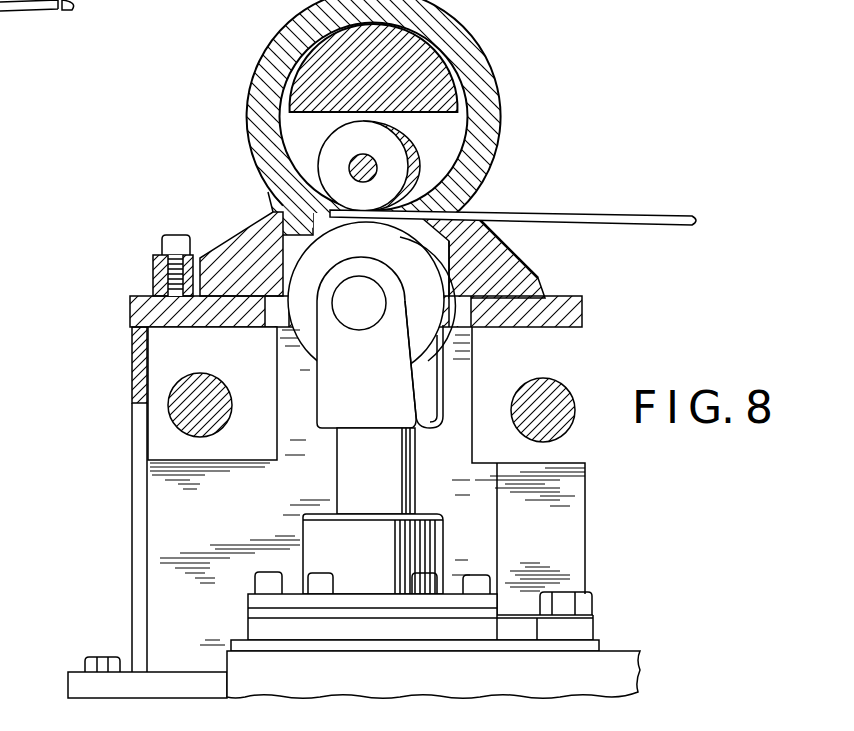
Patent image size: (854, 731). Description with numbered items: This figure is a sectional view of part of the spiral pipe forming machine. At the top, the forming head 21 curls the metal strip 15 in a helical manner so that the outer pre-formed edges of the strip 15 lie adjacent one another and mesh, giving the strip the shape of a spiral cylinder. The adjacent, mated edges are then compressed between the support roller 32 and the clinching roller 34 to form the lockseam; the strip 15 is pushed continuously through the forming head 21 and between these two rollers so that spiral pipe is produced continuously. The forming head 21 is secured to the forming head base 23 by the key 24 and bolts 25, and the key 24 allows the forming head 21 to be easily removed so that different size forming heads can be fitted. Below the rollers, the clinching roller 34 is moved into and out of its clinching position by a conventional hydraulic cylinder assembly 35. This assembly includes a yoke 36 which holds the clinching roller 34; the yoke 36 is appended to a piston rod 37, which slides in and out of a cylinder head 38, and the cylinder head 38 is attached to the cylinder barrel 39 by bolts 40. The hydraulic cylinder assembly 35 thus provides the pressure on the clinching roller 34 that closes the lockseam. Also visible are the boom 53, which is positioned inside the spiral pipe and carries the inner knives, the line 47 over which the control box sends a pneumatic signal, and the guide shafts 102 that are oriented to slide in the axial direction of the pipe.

The strip 15 is at (645, 215).
The forming head 21 is at (473, 52).
The forming head base 23 is at (137, 372).
The key 24 is at (198, 262).
The bolts 25 is at (178, 233).
The support roller 32 is at (388, 146).
The clinching roller 34 is at (378, 251).
The hydraulic cylinder assembly 35 is at (326, 449).
The yoke 36 is at (382, 393).
The piston rod 37 is at (383, 478).
The cylinder head 38 is at (385, 563).
The cylinder barrel 39 is at (381, 684).
The bolts 40 is at (424, 585).
The line 47 is at (78, 7).
The boom 53 is at (418, 78).
The guide shafts 102 is at (182, 412).